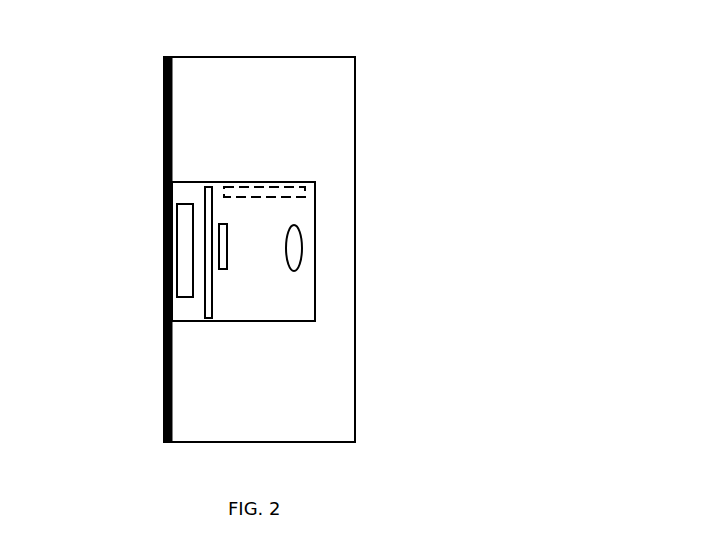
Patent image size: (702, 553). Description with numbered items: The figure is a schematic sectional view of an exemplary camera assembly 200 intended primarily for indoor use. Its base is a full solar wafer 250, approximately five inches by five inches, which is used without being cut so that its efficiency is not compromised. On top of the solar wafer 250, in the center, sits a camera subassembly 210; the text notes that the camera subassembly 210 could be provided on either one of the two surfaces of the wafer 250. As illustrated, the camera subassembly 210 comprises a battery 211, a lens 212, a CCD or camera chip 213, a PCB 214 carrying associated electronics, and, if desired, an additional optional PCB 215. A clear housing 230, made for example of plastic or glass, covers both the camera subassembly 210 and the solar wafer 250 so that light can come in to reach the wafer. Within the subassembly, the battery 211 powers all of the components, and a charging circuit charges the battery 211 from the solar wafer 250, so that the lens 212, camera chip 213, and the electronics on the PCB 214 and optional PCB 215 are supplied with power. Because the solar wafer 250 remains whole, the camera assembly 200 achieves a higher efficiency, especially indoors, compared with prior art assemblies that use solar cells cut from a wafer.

The camera assembly 200 is at (382, 114).
The solar wafer 250 is at (164, 116).
The clear housing 230 is at (355, 372).
The camera subassembly 210 is at (243, 251).
The additional optional PCB 215 is at (305, 192).
The lens 212 is at (302, 240).
The CCD or camera chip 213 is at (227, 263).
The battery 211 is at (179, 262).
The PCB 214 is at (203, 307).